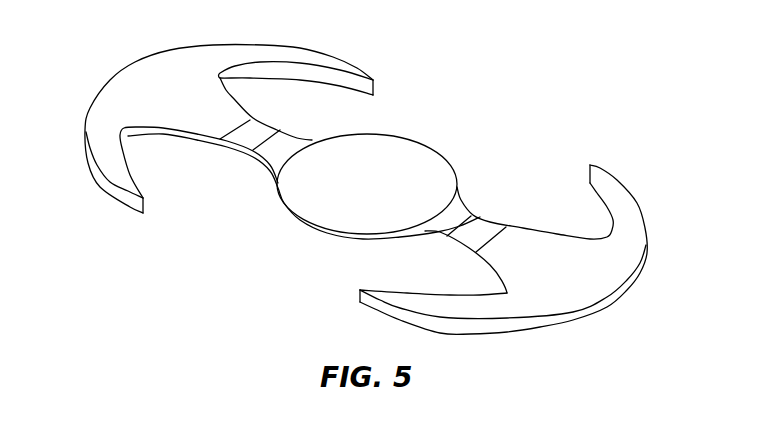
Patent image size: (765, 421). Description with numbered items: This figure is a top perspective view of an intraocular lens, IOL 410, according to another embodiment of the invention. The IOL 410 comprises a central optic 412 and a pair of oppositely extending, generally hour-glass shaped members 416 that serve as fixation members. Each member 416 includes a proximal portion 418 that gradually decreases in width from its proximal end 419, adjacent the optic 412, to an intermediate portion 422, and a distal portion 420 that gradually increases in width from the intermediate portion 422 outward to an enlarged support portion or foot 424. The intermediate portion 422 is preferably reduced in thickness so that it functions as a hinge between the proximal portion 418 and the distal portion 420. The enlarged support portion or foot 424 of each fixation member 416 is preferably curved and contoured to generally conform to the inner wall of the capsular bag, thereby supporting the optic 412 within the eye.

The IOL 410 is at (533, 64).
The optic 412 is at (300, 203).
The hour-glass shaped member 416 is at (499, 214).
The proximal portion 418 is at (441, 229).
The proximal end 419 is at (305, 147).
The distal portion 420 is at (537, 248).
The intermediate portion 422 is at (477, 235).
The enlarged support portion or foot 424 is at (636, 228).